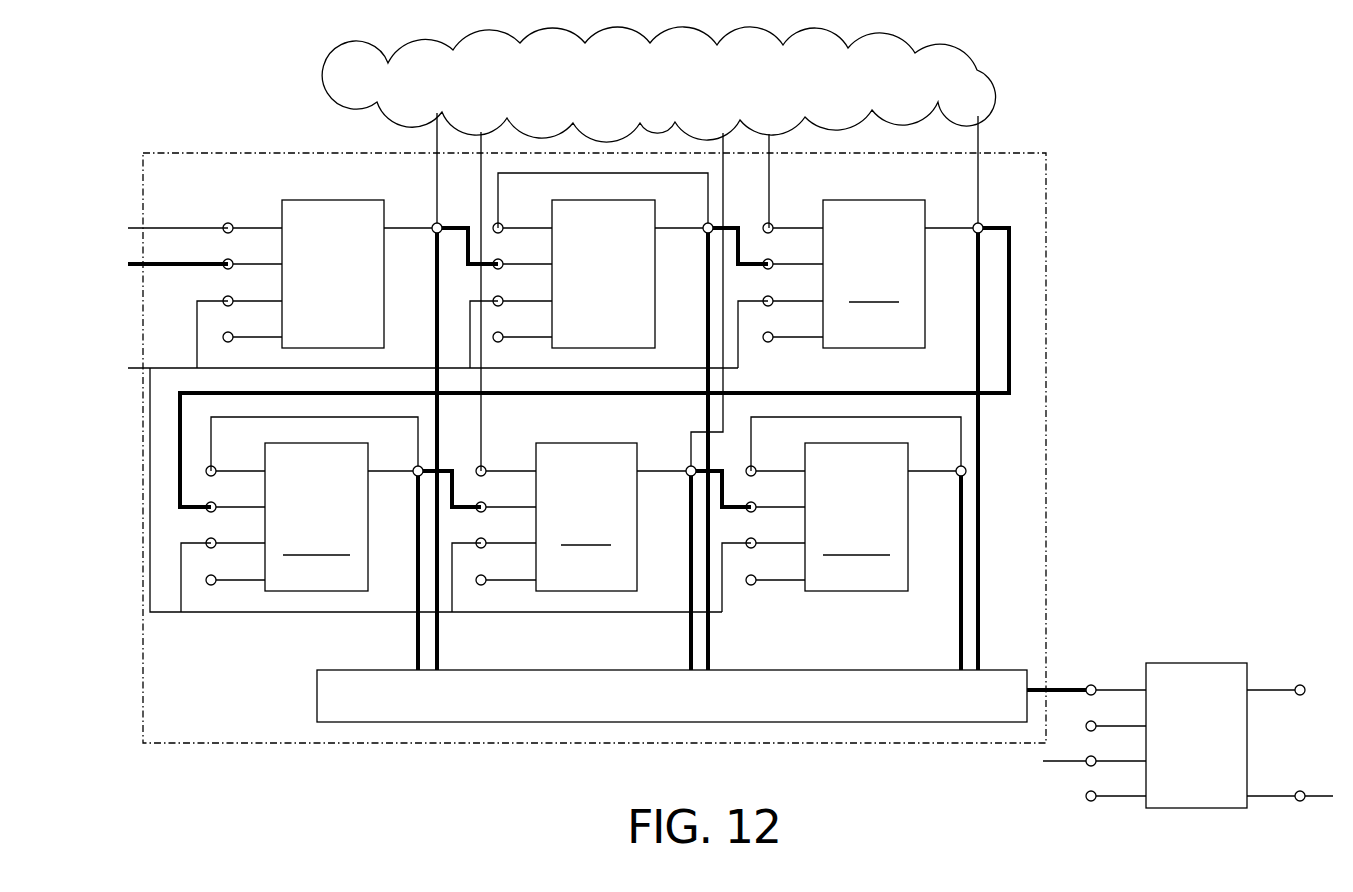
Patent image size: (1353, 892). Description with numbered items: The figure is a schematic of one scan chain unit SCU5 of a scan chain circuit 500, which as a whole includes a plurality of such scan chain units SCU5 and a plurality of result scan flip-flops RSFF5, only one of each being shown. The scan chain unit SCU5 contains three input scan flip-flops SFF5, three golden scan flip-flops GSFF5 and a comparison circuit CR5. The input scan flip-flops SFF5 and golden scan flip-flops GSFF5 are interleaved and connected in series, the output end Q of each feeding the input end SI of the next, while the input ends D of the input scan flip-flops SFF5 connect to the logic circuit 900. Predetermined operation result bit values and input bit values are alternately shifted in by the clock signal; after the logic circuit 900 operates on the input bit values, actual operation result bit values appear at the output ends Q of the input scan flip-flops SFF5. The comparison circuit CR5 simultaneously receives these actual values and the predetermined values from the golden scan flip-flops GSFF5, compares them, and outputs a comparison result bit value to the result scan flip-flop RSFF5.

The logic circuit 900 is at (752, 94).
The scan chain circuit 500 is at (1275, 513).
The scan chain unit SCU5 is at (1046, 523).
The result scan flip-flop RSFF5 is at (1165, 663).
The input scan flip-flop SFF5 is at (308, 302).
The golden scan flip-flop GSFF5 is at (637, 312).
The comparison circuit CR5 is at (805, 706).